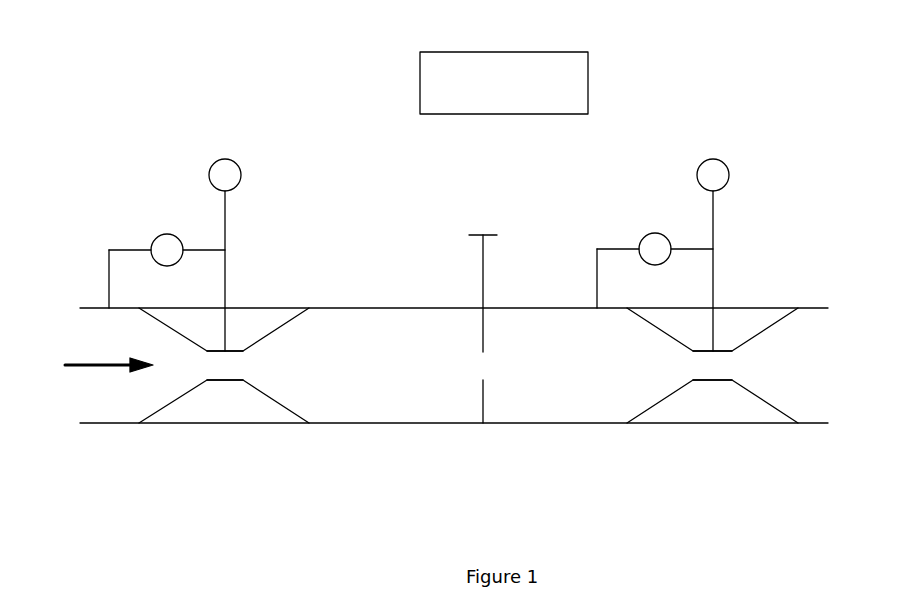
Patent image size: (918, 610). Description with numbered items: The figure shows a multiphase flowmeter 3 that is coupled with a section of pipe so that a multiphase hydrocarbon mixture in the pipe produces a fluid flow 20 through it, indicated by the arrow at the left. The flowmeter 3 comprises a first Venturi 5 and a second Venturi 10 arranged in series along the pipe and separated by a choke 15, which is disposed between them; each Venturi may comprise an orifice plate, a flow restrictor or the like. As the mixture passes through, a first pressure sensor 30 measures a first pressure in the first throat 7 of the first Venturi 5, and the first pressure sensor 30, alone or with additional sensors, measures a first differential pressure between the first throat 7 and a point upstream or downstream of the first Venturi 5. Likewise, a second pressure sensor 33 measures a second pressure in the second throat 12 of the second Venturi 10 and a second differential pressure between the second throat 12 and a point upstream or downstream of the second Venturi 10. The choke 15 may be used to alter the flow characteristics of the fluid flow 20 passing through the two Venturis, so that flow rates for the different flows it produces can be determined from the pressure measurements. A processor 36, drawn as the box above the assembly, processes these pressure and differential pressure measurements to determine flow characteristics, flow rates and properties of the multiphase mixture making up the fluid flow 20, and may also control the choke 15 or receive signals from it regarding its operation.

The flowmeter 3 is at (626, 171).
The first Venturi 5 is at (192, 388).
The first throat 7 is at (237, 375).
The second Venturi 10 is at (768, 398).
The second throat 12 is at (720, 375).
The choke 15 is at (481, 287).
The fluid flow 20 is at (97, 367).
The first pressure sensor 30 is at (241, 172).
The second pressure sensor 33 is at (729, 173).
The processor 36 is at (420, 82).